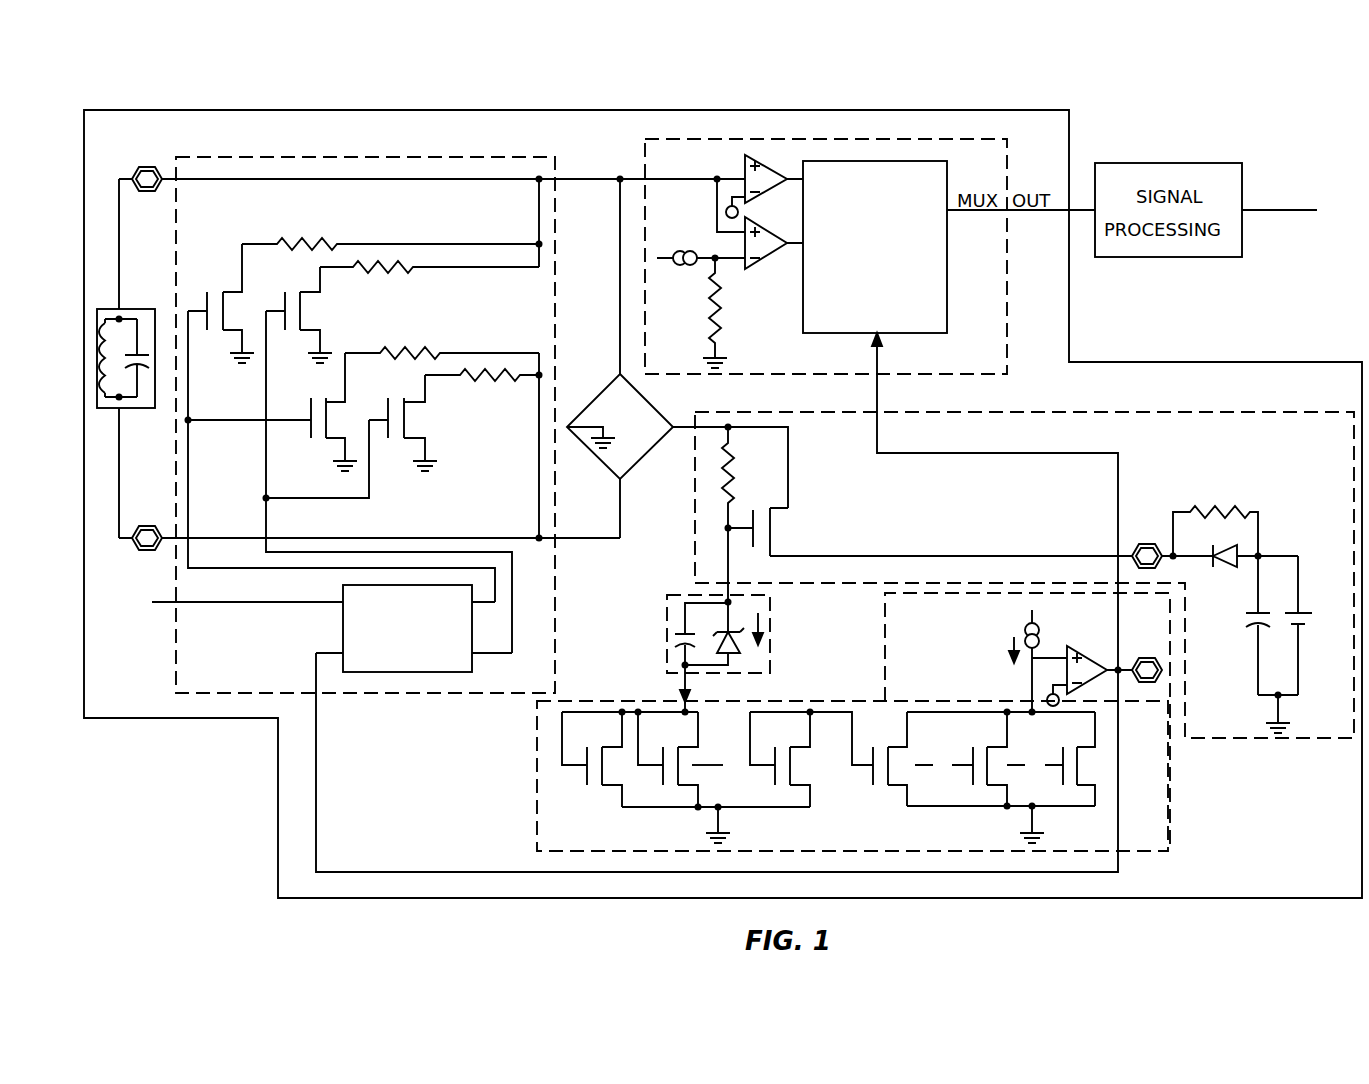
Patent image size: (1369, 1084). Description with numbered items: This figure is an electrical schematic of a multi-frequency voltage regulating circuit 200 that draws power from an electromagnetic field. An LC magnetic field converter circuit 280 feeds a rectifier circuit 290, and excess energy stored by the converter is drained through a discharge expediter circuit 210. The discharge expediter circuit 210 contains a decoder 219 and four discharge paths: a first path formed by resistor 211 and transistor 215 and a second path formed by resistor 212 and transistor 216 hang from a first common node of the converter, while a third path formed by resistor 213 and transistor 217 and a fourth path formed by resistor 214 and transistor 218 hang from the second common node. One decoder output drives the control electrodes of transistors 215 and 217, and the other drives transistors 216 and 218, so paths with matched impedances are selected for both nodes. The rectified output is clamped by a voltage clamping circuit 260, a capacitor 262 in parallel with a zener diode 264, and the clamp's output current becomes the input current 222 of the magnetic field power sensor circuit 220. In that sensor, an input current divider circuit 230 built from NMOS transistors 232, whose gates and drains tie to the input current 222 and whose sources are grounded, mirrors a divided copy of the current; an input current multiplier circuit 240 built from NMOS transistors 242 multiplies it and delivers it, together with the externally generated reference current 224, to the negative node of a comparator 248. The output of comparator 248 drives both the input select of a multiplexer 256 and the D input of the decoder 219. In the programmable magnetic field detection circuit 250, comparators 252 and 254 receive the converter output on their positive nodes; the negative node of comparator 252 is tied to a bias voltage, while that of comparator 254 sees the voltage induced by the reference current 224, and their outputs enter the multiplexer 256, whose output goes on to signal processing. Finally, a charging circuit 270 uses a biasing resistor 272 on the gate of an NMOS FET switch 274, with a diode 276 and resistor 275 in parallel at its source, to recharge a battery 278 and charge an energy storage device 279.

The multi-frequency voltage regulating circuit 200 is at (723, 504).
The discharge expediter circuit 210 is at (365, 407).
The resistor 211 is at (385, 229).
The resistor 212 is at (429, 292).
The resistor 213 is at (442, 340).
The resistor 214 is at (482, 399).
The transistor 215 is at (217, 303).
The transistor 216 is at (322, 315).
The transistor 217 is at (272, 412).
The transistor 218 is at (403, 417).
The decoder 219 is at (332, 628).
The magnetic field power sensor circuit 220 is at (820, 776).
The input current 222 is at (755, 677).
The reference current 224 is at (863, 462).
The input current divider circuit 230 is at (716, 760).
The NMOS transistor 232 is at (716, 742).
The input current multiplier circuit 240 is at (1021, 722).
The NMOS transistor 242 is at (984, 741).
The comparator 248 is at (1097, 667).
The programmable magnetic field detection circuit 250 is at (826, 256).
The comparator 252 is at (740, 180).
The comparator 254 is at (760, 246).
The multiplexer 256 is at (862, 266).
The voltage clamping circuit 260 is at (667, 636).
The capacitor 262 is at (687, 632).
The zener diode 264 is at (771, 633).
The charging circuit 270 is at (1024, 557).
The biasing resistor 272 is at (754, 514).
The NMOS FET switch 274 is at (781, 532).
The resistor 275 is at (1234, 514).
The diode 276 is at (1235, 581).
The battery 278 is at (1305, 610).
The energy storage device 279 is at (1235, 625).
The magnetic field converter circuit 280 is at (132, 340).
The rectifier circuit 290 is at (625, 358).